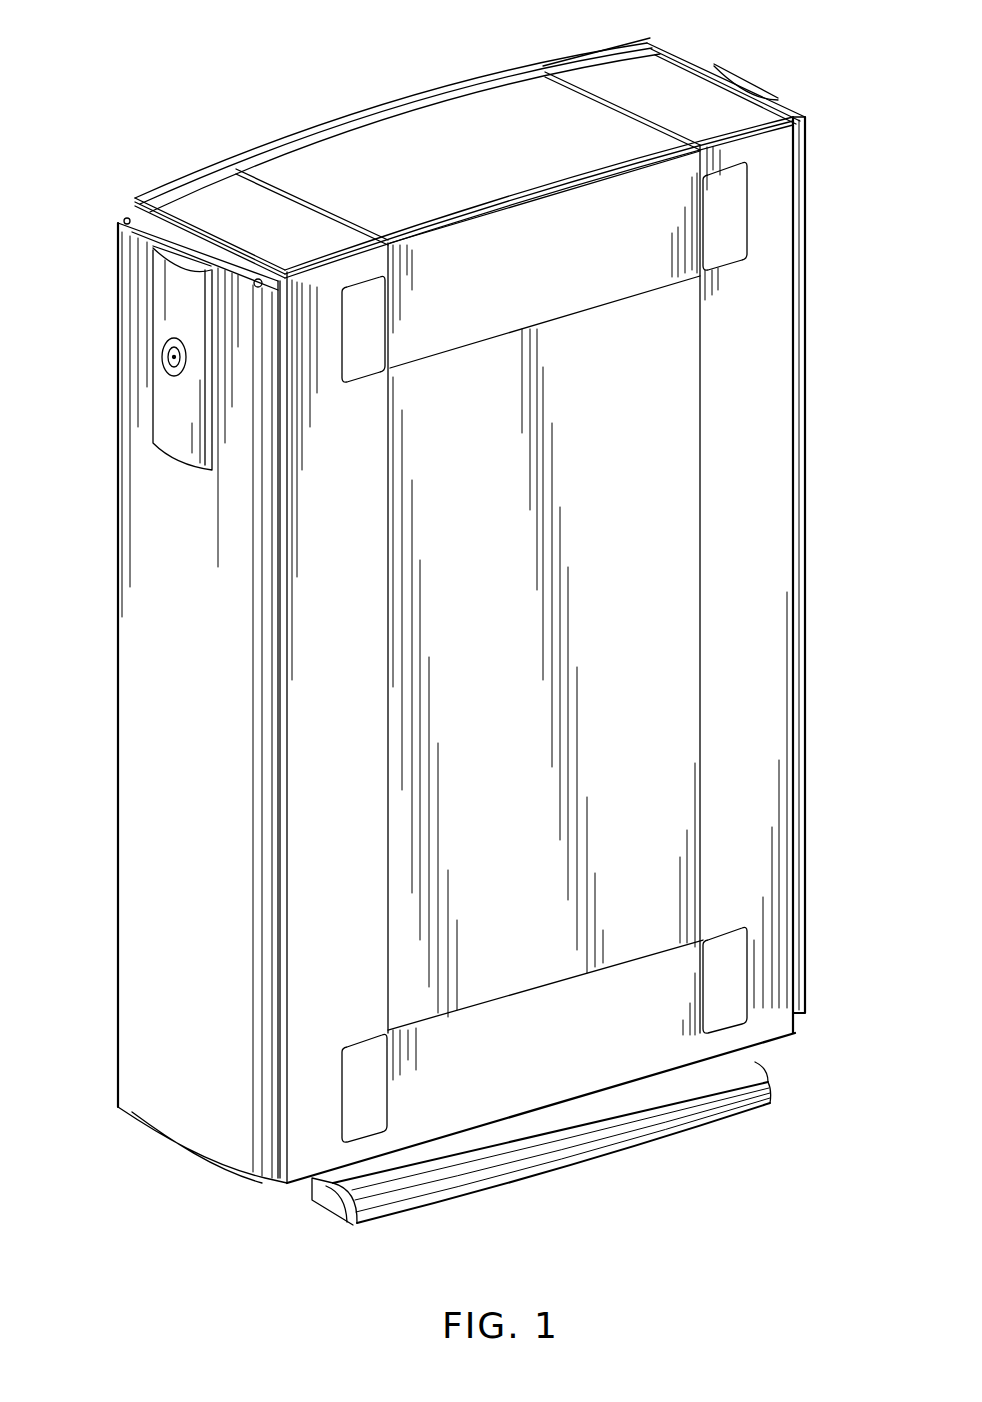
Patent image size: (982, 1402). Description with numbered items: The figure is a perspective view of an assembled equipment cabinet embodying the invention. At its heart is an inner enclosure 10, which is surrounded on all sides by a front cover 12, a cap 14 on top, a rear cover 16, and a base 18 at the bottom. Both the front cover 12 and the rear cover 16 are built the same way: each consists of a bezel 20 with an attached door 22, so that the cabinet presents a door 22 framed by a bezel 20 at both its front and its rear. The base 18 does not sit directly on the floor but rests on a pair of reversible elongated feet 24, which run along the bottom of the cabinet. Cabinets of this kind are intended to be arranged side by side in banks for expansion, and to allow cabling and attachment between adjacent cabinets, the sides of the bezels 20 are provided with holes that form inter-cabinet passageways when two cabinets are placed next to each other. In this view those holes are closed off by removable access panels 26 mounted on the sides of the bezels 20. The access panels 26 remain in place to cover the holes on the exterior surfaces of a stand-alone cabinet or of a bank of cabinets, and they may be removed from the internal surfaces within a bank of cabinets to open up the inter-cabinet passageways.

The inner enclosure 10 is at (666, 756).
The front cover 12 is at (118, 212).
The cap 14 is at (425, 100).
The rear cover 16 is at (703, 53).
The base 18 is at (533, 1007).
The bezel 20 is at (183, 181).
The door 22 is at (147, 531).
The reversible elongated feet 24 is at (547, 1174).
The removable access panels 26 is at (358, 367).